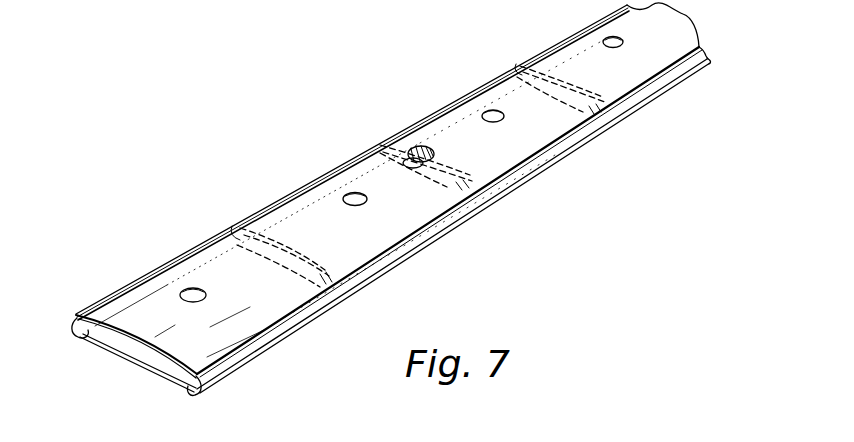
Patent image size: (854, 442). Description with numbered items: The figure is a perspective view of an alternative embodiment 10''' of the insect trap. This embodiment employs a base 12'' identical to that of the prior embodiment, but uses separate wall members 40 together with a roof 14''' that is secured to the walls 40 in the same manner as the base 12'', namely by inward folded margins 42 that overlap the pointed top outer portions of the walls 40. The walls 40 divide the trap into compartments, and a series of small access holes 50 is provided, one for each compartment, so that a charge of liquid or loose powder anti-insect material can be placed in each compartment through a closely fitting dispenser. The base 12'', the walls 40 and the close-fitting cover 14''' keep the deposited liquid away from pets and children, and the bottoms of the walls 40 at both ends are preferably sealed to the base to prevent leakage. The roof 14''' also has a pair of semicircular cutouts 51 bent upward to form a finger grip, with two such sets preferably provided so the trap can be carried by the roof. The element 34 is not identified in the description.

The embodiment 10''' is at (392, 161).
The base 12'' is at (395, 241).
The roof 14''' is at (102, 243).
The arched cover sheet 34 is at (280, 328).
The wall members 40 is at (633, 100).
The inward folded margins 42 is at (82, 341).
The access holes 50 is at (193, 288).
The semicircular cutouts 51 is at (427, 147).